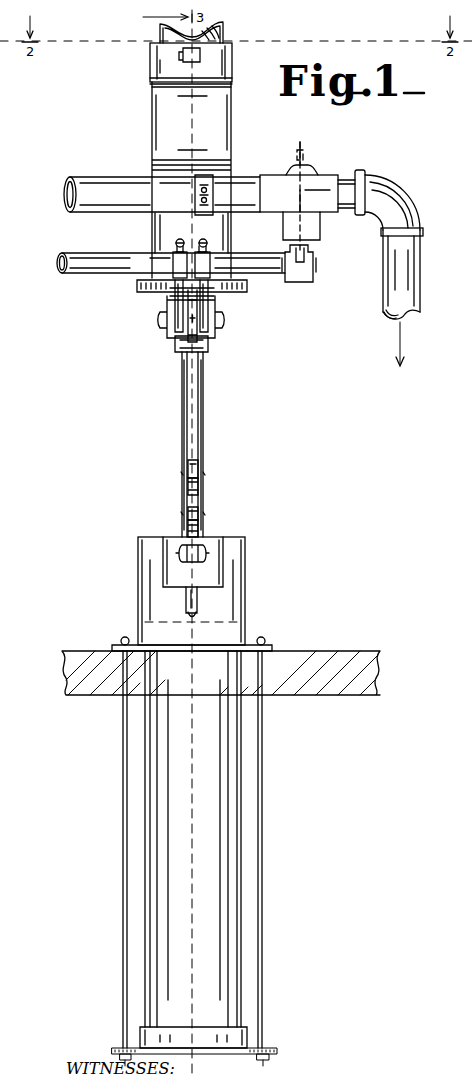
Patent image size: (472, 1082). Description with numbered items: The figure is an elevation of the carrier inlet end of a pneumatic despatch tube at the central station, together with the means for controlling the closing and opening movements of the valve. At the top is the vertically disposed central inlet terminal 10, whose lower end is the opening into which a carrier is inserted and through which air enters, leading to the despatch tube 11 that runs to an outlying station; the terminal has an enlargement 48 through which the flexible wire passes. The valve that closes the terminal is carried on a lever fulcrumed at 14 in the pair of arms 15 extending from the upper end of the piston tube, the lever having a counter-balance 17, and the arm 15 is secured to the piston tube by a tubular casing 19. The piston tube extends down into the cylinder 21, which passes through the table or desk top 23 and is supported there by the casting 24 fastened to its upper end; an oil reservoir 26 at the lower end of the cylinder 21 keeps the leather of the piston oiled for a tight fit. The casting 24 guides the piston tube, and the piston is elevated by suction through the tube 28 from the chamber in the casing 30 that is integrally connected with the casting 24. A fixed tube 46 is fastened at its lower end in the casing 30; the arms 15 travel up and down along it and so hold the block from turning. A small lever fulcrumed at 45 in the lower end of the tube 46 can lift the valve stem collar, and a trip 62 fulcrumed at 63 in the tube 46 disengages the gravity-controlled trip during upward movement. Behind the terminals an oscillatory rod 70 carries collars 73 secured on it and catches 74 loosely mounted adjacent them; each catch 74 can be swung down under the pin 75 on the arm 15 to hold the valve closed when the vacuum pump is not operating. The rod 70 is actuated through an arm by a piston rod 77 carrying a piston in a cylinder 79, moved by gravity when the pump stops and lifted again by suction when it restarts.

The central inlet terminal 10 is at (151, 67).
The despatch tube 11 is at (224, 31).
The enlargement of the inlet terminal 48 is at (214, 132).
The cylinder 79 is at (300, 182).
The piston rod 77 is at (304, 136).
The oscillatory rod 70 is at (262, 262).
The collars 73 is at (172, 256).
The catches 74 is at (192, 280).
The pin 75 is at (200, 291).
The arms 15 is at (176, 312).
The fulcrum 14 is at (166, 321).
The counter-balance 17 is at (198, 330).
The tubular casing 19 is at (176, 345).
The fixed tube 46 is at (205, 386).
The trip 62 is at (194, 470).
The fulcrum of trip 63 is at (199, 478).
The fulcrum of small lever 45 is at (199, 512).
The casing 30 is at (212, 566).
The suction tube 28 is at (198, 603).
The casting 24 is at (232, 628).
The table or desk top 23 is at (300, 655).
The cylinder 21 is at (228, 770).
The oil reservoir 26 is at (232, 1037).